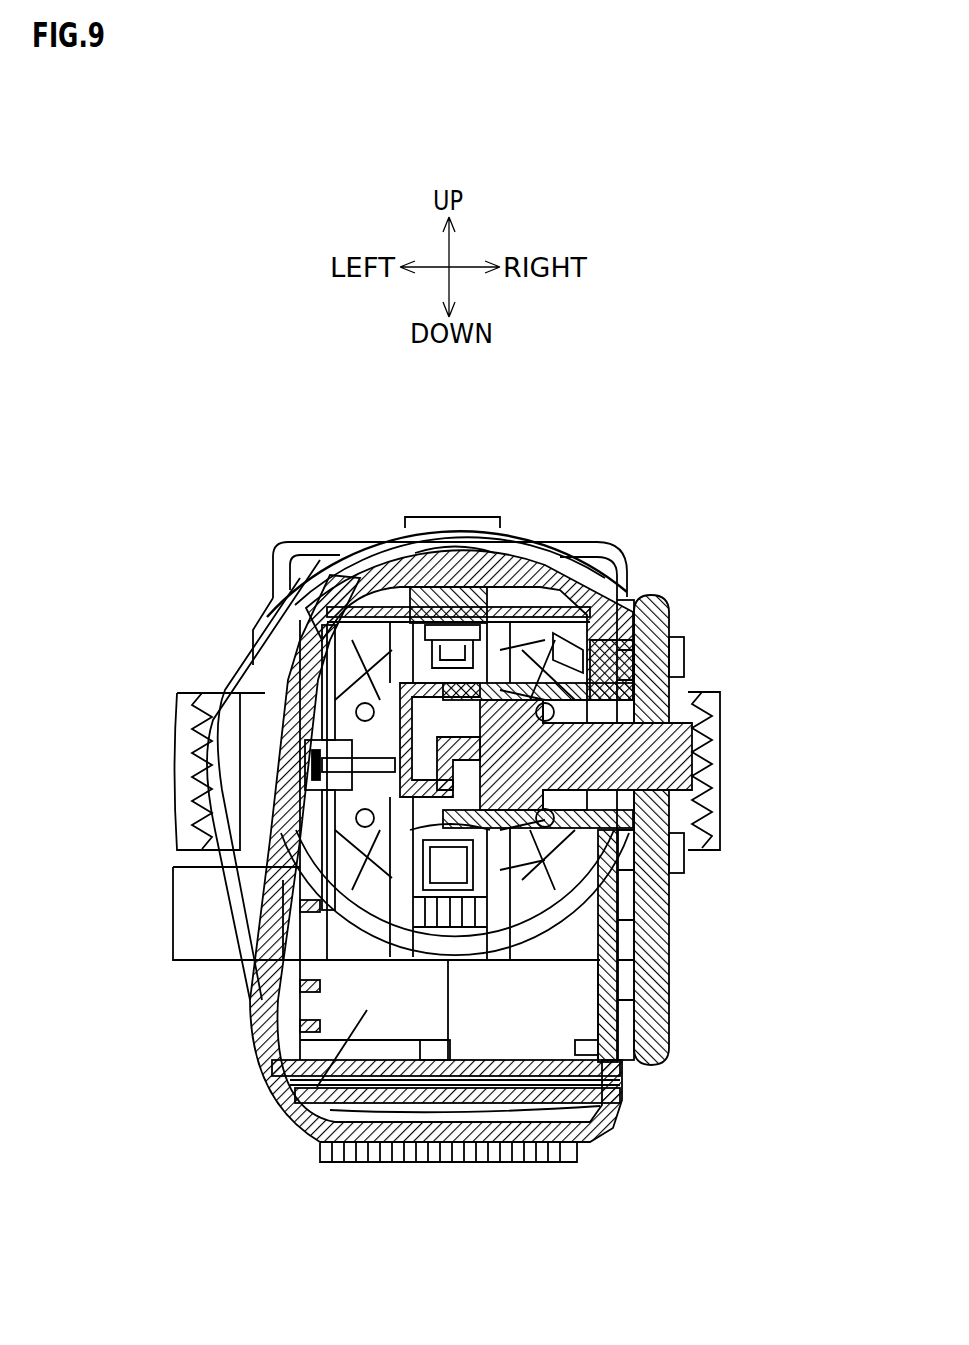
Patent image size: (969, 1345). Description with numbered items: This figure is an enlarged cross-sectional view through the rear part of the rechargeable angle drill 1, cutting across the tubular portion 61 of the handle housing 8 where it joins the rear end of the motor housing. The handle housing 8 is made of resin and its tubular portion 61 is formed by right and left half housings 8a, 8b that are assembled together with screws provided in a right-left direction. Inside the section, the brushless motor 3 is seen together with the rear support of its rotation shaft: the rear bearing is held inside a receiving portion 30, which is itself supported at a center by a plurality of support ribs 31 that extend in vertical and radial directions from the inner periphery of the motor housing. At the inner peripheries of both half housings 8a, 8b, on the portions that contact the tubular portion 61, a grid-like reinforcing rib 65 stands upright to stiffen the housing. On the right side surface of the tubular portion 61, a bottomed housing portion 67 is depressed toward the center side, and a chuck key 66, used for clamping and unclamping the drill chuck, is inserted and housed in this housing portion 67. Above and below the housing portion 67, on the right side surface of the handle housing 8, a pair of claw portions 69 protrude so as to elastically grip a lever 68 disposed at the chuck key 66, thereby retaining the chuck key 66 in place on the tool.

The angle drill 1 is at (626, 479).
The brushless motor 3 is at (395, 655).
The handle housing 8 is at (356, 535).
The half housing 8a is at (298, 693).
The half housing 8b is at (593, 627).
The receiving portion 30 is at (388, 765).
The support rib 31 is at (360, 640).
The tubular portion 61 is at (307, 1125).
The reinforcing rib 65 is at (265, 1048).
The chuck key 66 is at (655, 755).
The housing portion 67 is at (640, 707).
The lever 68 is at (653, 988).
The claw portion 69 is at (683, 658).